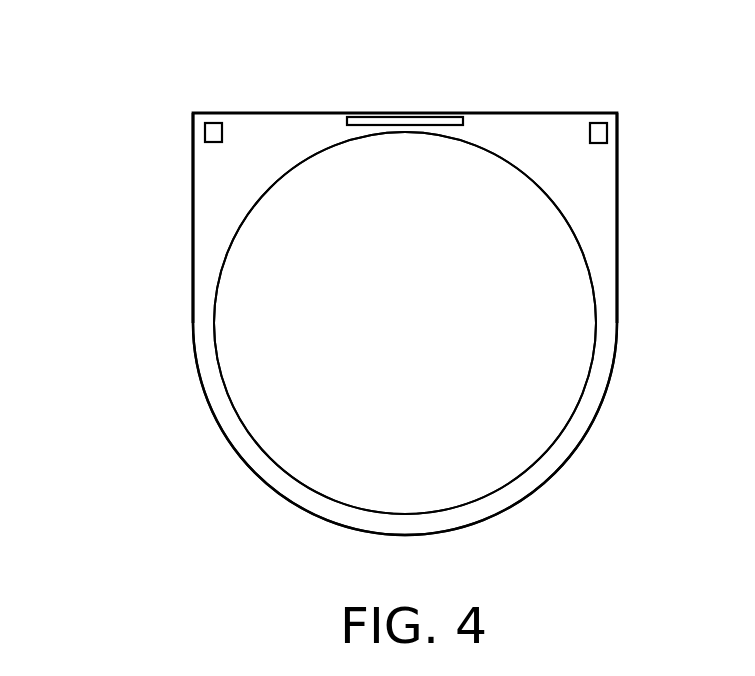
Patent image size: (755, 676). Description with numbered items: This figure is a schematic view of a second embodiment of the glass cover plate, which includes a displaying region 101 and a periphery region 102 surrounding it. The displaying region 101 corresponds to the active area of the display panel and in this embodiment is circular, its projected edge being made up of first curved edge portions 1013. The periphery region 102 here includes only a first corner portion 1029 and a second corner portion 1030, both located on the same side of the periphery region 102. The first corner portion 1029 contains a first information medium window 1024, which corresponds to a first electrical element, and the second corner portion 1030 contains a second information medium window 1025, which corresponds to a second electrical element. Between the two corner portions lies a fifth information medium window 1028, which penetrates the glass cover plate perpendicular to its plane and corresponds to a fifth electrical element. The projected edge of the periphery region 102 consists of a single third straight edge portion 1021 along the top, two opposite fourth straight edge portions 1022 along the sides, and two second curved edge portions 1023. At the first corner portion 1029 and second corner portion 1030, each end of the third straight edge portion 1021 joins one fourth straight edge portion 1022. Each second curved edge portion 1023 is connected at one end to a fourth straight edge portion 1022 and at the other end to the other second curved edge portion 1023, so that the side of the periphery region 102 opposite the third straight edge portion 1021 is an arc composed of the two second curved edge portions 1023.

The displaying region 101 is at (555, 250).
The periphery region 102 is at (608, 287).
The first curved edge portion 1013 is at (268, 193).
The third straight edge portion 1021 is at (360, 116).
The fourth straight edge portion 1022 is at (193, 291).
The second curved edge portion 1023 is at (210, 412).
The first information medium window 1024 is at (607, 142).
The second information medium window 1025 is at (205, 143).
The fifth information medium window 1028 is at (437, 113).
The first corner portion 1029 is at (554, 152).
The second corner portion 1030 is at (253, 152).